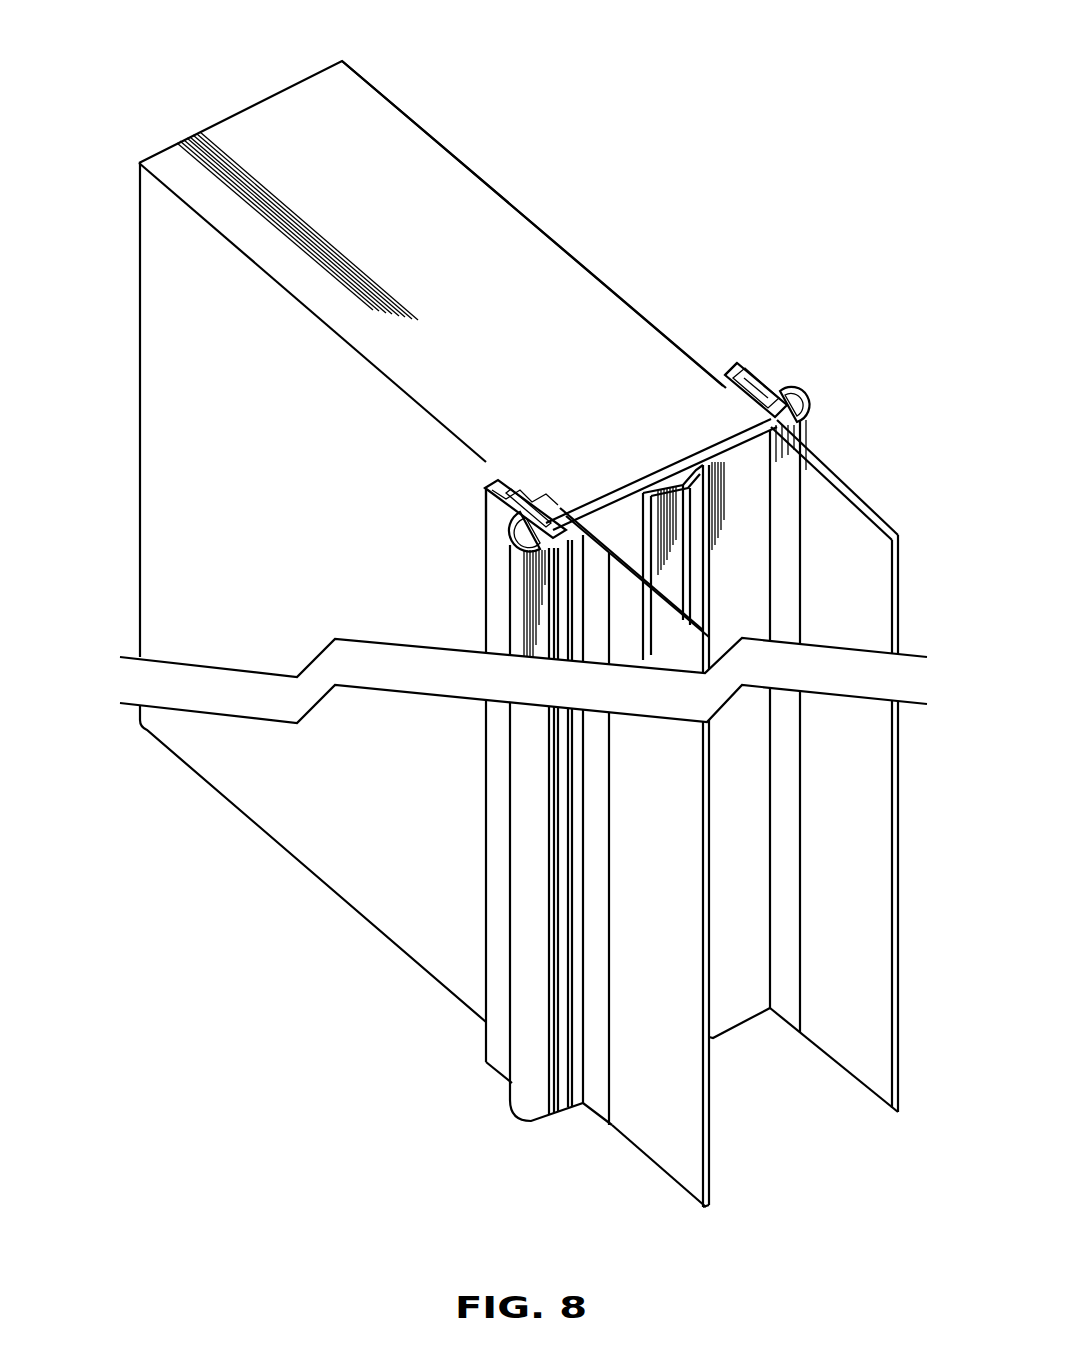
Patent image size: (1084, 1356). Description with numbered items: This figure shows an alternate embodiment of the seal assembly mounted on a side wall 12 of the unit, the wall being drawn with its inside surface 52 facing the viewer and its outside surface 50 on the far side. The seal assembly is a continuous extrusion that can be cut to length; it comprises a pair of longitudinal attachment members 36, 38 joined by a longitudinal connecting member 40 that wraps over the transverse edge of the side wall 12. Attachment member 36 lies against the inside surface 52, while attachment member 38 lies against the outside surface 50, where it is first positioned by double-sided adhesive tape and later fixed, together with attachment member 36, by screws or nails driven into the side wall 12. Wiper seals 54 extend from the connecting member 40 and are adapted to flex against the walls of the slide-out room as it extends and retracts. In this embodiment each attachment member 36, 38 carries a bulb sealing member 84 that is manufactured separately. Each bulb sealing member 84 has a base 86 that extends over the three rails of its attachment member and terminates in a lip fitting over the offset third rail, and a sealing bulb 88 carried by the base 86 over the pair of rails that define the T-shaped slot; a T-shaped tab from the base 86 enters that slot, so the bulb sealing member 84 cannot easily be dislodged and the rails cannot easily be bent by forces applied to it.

The side wall 12 is at (287, 123).
The outside surface 50 is at (503, 193).
The inside surface 52 is at (175, 395).
The wiper seals 54 is at (880, 1070).
The longitudinal connecting member 40 is at (740, 558).
The longitudinal attachment member 36 is at (540, 488).
The longitudinal attachment member 38 is at (712, 398).
The bulb sealing member 84 is at (822, 416).
The base 86 is at (745, 372).
The sealing bulb 88 is at (800, 392).